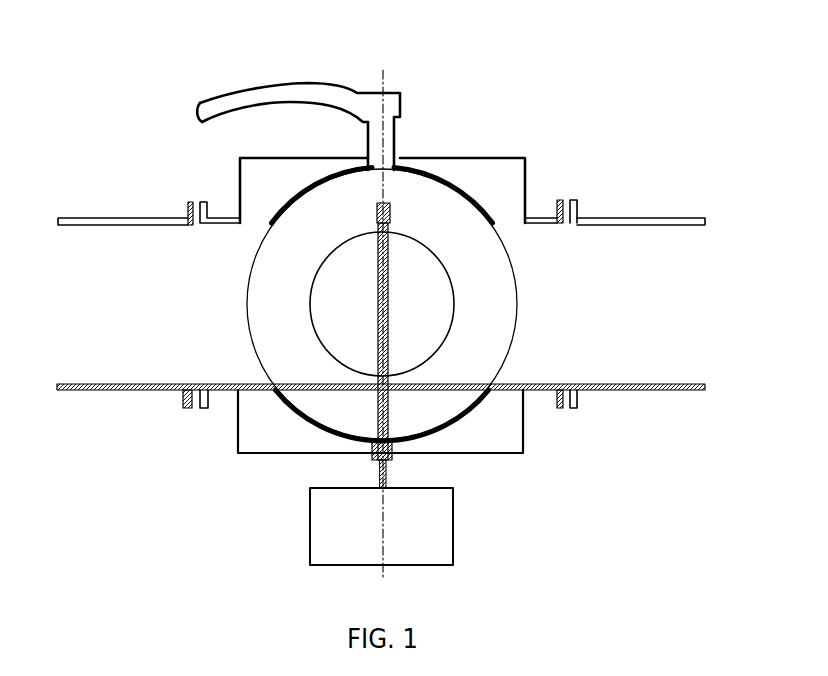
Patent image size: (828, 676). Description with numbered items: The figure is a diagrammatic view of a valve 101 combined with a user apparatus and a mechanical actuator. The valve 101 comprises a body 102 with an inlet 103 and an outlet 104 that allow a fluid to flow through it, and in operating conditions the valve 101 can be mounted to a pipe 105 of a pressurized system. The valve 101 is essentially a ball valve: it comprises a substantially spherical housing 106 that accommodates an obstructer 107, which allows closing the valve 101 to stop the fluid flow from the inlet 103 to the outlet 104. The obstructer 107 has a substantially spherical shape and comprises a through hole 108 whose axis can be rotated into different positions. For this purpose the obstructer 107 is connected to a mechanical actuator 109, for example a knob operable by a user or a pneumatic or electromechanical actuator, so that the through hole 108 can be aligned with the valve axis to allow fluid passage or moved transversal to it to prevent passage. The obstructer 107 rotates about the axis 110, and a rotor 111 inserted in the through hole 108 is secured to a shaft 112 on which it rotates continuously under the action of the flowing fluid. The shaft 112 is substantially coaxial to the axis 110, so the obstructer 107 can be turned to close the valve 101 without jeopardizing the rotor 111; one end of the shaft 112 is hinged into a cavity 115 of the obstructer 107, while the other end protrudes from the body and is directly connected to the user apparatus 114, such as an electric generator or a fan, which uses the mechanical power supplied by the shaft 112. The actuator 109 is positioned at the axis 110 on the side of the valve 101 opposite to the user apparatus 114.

The valve 101 is at (527, 68).
The body 102 is at (510, 437).
The inlet 103 is at (216, 319).
The outlet 104 is at (545, 304).
The pipe 105 is at (95, 218).
The substantially spherical housing 106 is at (443, 432).
The obstructer 107 is at (437, 211).
The through hole 108 is at (493, 277).
The mechanical actuator 109 is at (373, 217).
The axis 110 is at (383, 75).
The rotor 111 is at (337, 315).
The shaft 112 is at (376, 355).
The user apparatus 114 is at (327, 552).
The cavity 115 is at (282, 96).